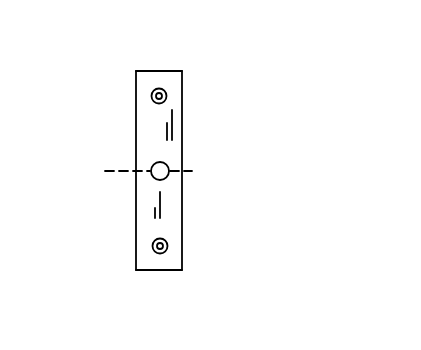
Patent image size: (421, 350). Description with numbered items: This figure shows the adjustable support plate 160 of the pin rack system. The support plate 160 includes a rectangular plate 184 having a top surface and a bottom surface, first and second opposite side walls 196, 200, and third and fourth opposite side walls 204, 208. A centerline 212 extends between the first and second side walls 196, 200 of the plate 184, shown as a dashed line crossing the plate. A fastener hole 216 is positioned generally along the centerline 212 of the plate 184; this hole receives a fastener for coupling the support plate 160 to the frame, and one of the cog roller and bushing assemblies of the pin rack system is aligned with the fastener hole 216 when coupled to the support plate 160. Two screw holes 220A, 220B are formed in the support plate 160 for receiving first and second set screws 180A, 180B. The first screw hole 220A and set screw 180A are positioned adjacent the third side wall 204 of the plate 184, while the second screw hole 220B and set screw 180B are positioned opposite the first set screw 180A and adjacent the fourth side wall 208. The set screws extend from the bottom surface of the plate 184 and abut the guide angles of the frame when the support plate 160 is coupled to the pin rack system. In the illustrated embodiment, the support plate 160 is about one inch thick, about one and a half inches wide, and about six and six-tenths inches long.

The support plate 160 is at (267, 83).
The first set screw 180A is at (152, 91).
The second set screw 180B is at (152, 247).
The rectangular plate 184 is at (184, 77).
The first side wall 196 is at (182, 143).
The second side wall 200 is at (136, 117).
The third side wall 204 is at (167, 72).
The fourth side wall 208 is at (160, 270).
The centerline 212 is at (193, 172).
The fastener hole 216 is at (152, 176).
The first screw hole 220A is at (167, 100).
The second screw hole 220B is at (167, 242).